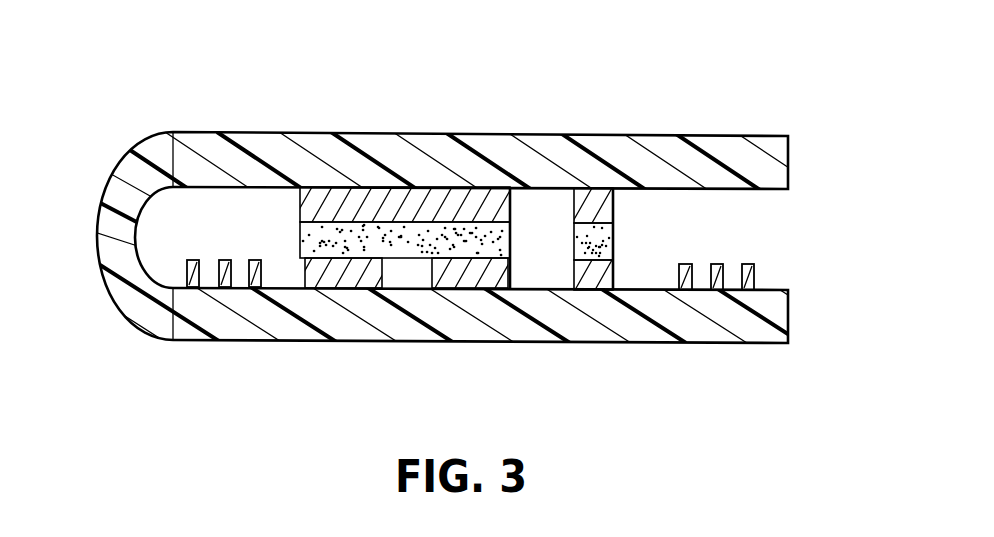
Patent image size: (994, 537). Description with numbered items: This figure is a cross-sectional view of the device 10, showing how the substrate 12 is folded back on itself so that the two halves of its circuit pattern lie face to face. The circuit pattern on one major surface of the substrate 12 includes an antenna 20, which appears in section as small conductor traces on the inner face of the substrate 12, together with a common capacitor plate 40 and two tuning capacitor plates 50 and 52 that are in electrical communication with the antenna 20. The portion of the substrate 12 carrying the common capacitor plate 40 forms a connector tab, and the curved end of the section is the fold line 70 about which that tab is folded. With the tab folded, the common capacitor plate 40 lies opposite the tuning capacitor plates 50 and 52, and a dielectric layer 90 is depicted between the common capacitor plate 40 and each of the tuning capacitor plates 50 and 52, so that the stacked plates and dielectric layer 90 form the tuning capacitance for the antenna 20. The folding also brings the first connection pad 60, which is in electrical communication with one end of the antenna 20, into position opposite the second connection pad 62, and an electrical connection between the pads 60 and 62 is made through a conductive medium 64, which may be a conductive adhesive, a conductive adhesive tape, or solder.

The device 10 is at (708, 113).
The substrate 12 is at (788, 145).
The antenna 20 is at (193, 288).
The common capacitor plate 40 is at (427, 187).
The tuning capacitor plate 50 is at (347, 288).
The tuning capacitor plate 52 is at (462, 290).
The first connection pad 60 is at (602, 188).
The second connection pad 62 is at (577, 290).
The conductive medium 64 is at (613, 240).
The fold line 70 is at (103, 278).
The dielectric layer 90 is at (300, 237).